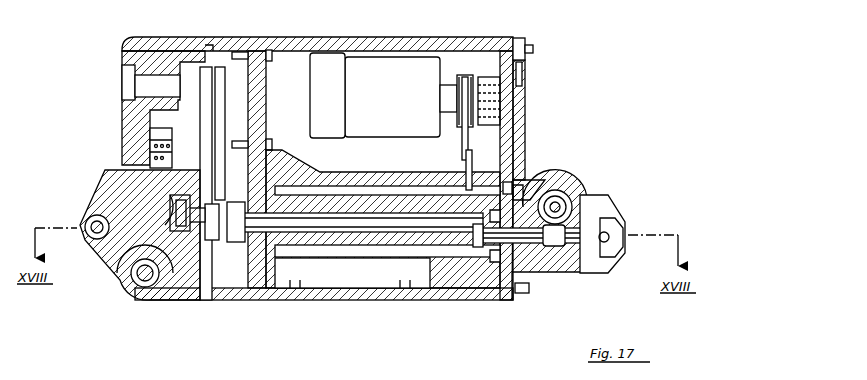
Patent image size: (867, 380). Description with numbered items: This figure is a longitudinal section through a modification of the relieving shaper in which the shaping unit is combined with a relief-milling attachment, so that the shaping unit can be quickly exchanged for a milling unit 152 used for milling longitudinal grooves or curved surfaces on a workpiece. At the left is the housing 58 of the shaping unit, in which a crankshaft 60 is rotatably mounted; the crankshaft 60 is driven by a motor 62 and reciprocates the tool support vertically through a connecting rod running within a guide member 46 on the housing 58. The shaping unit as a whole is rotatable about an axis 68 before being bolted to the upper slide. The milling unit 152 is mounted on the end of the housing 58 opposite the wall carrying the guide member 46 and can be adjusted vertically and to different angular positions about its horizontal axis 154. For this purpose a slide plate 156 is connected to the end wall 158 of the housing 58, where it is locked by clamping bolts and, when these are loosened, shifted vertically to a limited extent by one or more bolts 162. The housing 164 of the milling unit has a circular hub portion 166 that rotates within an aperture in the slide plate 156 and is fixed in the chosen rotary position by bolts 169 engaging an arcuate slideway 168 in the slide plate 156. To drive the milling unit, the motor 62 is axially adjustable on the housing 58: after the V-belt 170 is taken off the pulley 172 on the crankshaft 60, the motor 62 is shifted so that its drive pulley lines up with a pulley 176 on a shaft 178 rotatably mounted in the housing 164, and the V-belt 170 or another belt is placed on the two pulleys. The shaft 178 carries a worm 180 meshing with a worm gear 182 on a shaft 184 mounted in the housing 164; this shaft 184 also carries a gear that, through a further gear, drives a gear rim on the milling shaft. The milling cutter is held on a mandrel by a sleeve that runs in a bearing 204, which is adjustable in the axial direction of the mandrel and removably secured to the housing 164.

The guide member 46 is at (205, 46).
The housing 58 is at (403, 49).
The crankshaft 60 is at (330, 200).
The motor 62 is at (325, 62).
The axis 68 is at (347, 282).
The milling unit 152 is at (565, 267).
The horizontal axis 154 is at (625, 240).
The slide plate 156 is at (525, 97).
The end wall 158 is at (520, 122).
The bolt 162 is at (525, 42).
The housing 164 is at (532, 188).
The circular hub portion 166 is at (505, 258).
The arcuate slideway 168 is at (505, 184).
The bolt 169 is at (522, 292).
The V-belt 170 is at (462, 145).
The pulley 172 is at (466, 160).
The pulley 176 is at (493, 212).
The shaft 178 is at (522, 232).
The worm 180 is at (553, 246).
The worm gear 182 is at (562, 196).
The shaft 184 is at (562, 205).
The bearing 204 is at (610, 228).